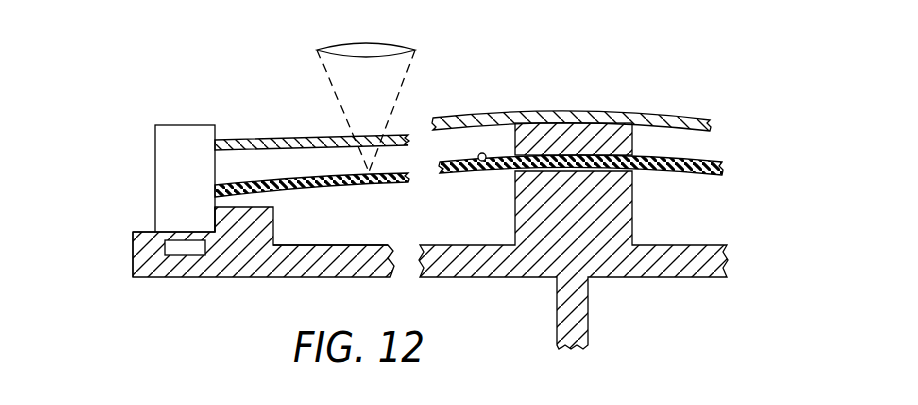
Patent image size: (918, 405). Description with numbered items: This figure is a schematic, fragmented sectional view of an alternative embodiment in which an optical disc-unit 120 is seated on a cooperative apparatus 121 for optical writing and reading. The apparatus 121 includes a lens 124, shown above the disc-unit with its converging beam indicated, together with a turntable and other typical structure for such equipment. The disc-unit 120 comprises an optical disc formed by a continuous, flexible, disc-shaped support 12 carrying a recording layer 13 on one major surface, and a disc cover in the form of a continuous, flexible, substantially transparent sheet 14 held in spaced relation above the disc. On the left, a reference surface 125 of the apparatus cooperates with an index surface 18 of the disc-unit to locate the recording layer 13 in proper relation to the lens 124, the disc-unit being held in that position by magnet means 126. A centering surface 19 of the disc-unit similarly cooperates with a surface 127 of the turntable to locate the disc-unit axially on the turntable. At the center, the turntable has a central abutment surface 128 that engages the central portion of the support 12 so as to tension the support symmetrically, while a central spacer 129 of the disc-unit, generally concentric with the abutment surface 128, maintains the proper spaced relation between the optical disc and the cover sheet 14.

The optical disc-unit 120 is at (231, 100).
The disc cover sheet 14 is at (282, 137).
The lens 124 is at (381, 47).
The disc-shaped support 12 is at (365, 186).
The turntable surface 127 is at (217, 218).
The index surface 18 is at (177, 231).
The centering surface 19 is at (213, 211).
The reference surface 125 is at (153, 232).
The magnet means 126 is at (166, 251).
The cooperative apparatus 121 is at (212, 296).
The central spacer 129 is at (635, 137).
The recording layer 13 is at (478, 163).
The central abutment surface 128 is at (625, 210).